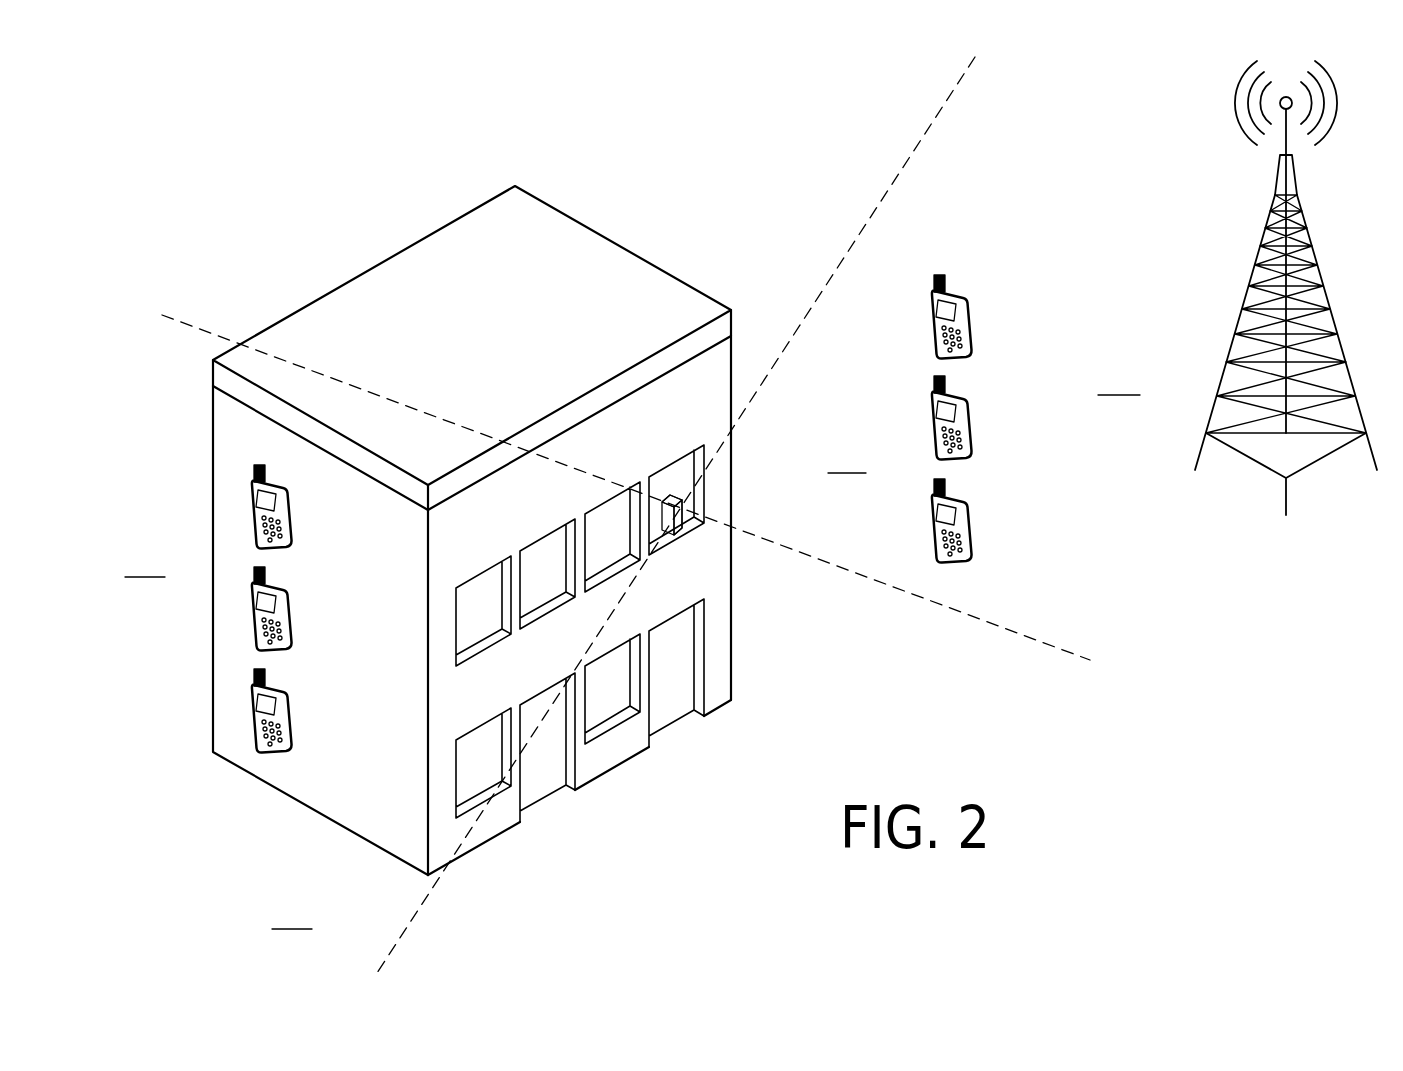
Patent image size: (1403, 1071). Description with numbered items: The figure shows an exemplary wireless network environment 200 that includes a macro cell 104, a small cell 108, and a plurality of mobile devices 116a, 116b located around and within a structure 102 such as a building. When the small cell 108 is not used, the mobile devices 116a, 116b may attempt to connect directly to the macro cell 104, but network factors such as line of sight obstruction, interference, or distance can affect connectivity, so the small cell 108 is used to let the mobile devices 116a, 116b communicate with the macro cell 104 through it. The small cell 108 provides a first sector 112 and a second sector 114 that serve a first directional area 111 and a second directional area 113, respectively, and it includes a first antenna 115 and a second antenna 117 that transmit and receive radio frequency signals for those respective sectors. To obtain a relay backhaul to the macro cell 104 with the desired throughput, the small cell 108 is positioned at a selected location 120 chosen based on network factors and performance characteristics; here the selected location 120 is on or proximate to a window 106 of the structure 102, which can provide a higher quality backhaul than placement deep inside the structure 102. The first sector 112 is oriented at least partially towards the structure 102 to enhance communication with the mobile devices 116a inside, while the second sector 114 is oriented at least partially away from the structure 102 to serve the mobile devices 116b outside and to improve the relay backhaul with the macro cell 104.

The wireless network environment 200 is at (170, 160).
The structure 102 is at (417, 242).
The macro cell 104 is at (1245, 305).
The window 106 is at (692, 453).
The small cell 108 is at (674, 538).
The first directional area 111 is at (607, 487).
The first sector 112 is at (290, 887).
The second directional area 113 is at (1121, 383).
The second sector 114 is at (844, 430).
The first antenna 115 is at (664, 501).
The mobile devices 116a is at (291, 514).
The mobile devices 116b is at (971, 320).
The second antenna 117 is at (696, 498).
The selected location 120 is at (660, 512).